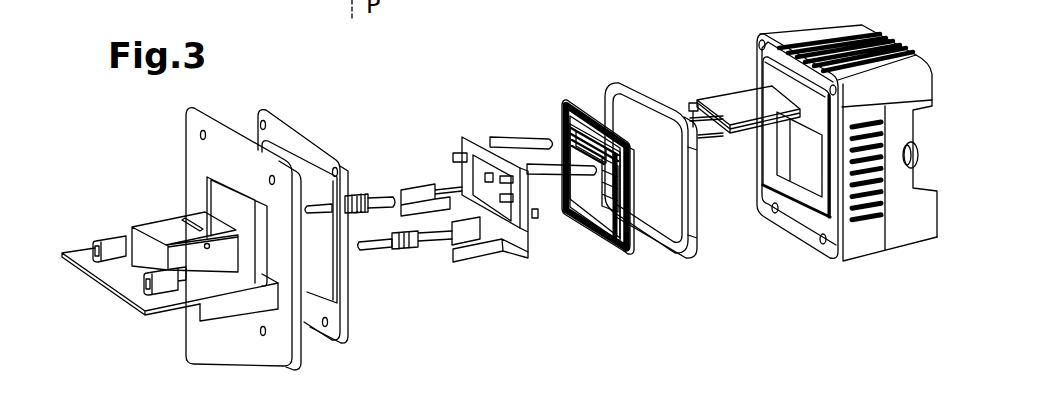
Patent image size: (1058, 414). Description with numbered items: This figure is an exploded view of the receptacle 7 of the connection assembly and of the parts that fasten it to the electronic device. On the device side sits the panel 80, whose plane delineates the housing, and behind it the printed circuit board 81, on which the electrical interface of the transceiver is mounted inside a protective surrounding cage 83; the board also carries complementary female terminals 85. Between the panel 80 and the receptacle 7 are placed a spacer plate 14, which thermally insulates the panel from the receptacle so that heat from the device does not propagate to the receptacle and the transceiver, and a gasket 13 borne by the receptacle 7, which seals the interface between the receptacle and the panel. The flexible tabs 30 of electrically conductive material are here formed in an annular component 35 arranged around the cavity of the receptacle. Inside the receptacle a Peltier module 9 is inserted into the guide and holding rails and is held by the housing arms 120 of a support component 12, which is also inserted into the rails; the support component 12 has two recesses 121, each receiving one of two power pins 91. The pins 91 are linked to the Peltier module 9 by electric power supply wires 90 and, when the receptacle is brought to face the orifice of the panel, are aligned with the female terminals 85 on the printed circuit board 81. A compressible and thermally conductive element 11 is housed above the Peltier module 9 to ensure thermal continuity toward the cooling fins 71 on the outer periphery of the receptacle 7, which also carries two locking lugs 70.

The receptacle 7 is at (923, 217).
The Peltier module 9 is at (807, 155).
The compressible and thermally conductive element 11 is at (723, 100).
The support component 12 is at (488, 133).
The gasket 13 is at (638, 92).
The spacer plate 14 is at (290, 140).
The flexible tabs 30 is at (592, 212).
The annular component 35 is at (584, 150).
The locking lugs 70 is at (918, 153).
The cooling fins 71 is at (864, 224).
The panel 80 is at (278, 342).
The printed circuit board 81 is at (107, 293).
The cage 83 is at (165, 227).
The female terminals 85 is at (113, 235).
The electric power supply wires 90 is at (690, 123).
The power pins 91 is at (365, 195).
The housing arms 120 is at (540, 163).
The recesses 121 is at (412, 187).